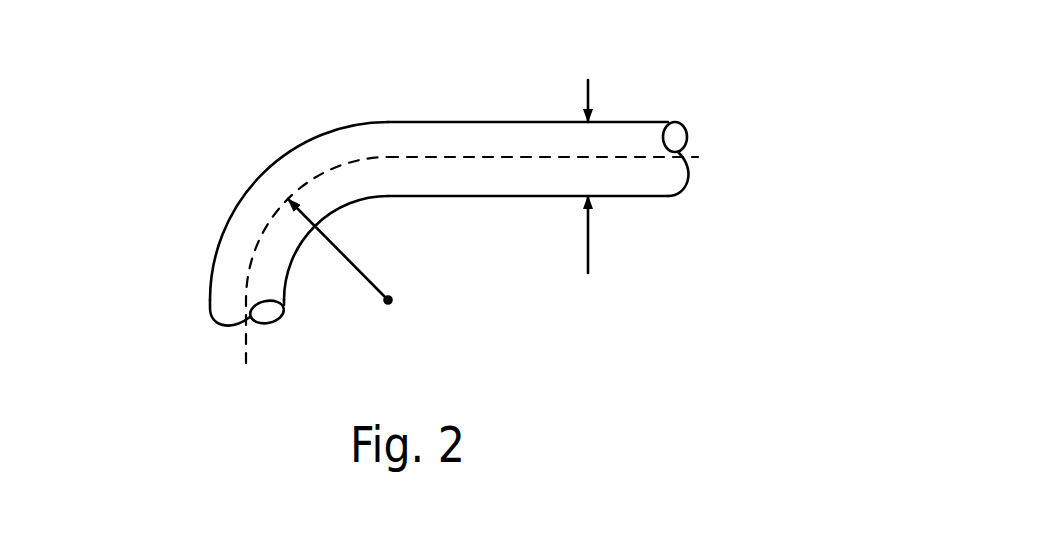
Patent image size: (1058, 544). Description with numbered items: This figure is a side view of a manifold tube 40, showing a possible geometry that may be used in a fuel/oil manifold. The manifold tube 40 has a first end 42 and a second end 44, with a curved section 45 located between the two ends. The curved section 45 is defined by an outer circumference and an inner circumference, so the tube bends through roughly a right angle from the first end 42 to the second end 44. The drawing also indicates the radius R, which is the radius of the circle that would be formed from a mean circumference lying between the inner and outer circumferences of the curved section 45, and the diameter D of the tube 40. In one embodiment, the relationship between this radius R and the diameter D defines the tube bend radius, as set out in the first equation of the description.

The manifold tube 40 is at (402, 193).
The first end 42 is at (260, 212).
The second end 44 is at (628, 143).
The curved section 45 is at (285, 152).